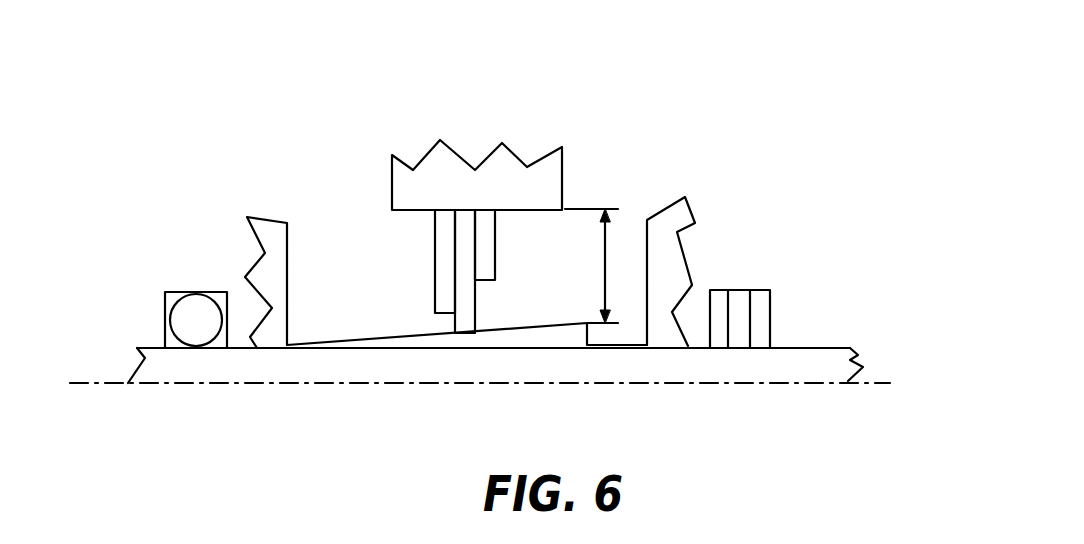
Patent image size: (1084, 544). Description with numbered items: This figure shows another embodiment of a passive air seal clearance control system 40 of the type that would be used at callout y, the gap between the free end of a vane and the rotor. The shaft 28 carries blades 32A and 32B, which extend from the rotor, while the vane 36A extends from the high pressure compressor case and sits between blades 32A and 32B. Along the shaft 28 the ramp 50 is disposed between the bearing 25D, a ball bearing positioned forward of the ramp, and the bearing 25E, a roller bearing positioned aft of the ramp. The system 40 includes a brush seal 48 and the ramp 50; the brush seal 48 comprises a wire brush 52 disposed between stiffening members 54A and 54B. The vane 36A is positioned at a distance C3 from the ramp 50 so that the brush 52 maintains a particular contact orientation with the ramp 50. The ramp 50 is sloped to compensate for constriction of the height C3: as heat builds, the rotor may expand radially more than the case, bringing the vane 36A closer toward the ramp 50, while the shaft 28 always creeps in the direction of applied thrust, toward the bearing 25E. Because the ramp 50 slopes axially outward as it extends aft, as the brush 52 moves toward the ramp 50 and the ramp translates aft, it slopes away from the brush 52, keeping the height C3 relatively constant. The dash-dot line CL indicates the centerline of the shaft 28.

The shaft 28 is at (168, 371).
The centerline CL is at (872, 380).
The bearing 25D is at (165, 293).
The bearing 25E is at (770, 290).
The blade 32A is at (247, 230).
The blade 32B is at (684, 228).
The vane 36A is at (552, 172).
The passive air seal clearance control system 40 is at (657, 112).
The brush seal 48 is at (402, 282).
The ramp 50 is at (570, 333).
The wire brush 52 is at (462, 322).
The stiffening member 54A is at (435, 247).
The stiffening member 54B is at (487, 262).
The clearance height C3 is at (592, 266).
The callout Y y is at (752, 108).